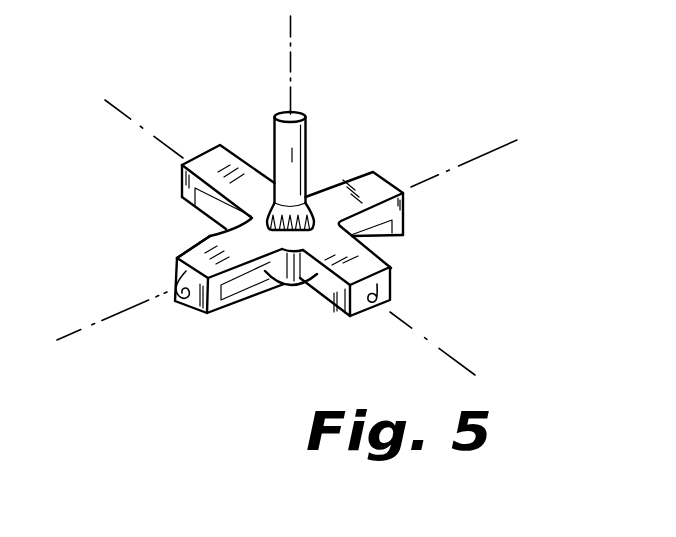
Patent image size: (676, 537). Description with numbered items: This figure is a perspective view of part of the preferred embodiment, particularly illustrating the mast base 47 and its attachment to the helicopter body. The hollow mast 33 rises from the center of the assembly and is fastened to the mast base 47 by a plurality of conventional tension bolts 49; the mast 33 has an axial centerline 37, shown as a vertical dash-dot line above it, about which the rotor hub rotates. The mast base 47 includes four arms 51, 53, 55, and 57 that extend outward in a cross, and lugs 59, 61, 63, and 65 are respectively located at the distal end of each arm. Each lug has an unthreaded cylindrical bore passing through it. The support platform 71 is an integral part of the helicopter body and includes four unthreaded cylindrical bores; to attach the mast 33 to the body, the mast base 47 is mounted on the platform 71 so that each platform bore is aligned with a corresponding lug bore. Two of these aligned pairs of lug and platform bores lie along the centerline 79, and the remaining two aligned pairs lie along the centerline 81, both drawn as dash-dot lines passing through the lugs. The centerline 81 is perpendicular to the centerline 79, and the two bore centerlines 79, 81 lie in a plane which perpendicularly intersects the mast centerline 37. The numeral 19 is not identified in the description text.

The hook catch 19 is at (172, 304).
The mast 33 is at (299, 116).
The axial centerline 37 is at (292, 40).
The mast base 47 is at (325, 165).
The tension bolts 49 is at (282, 246).
The arm 51 is at (358, 168).
The arm 53 is at (183, 240).
The arm 55 is at (395, 254).
The arm 57 is at (235, 145).
The lug 59 is at (404, 237).
The lug 61 is at (208, 314).
The lug 63 is at (348, 316).
The lug 65 is at (183, 203).
The support platform 71 is at (250, 300).
The centerline 79 is at (492, 150).
The centerline 81 is at (157, 139).